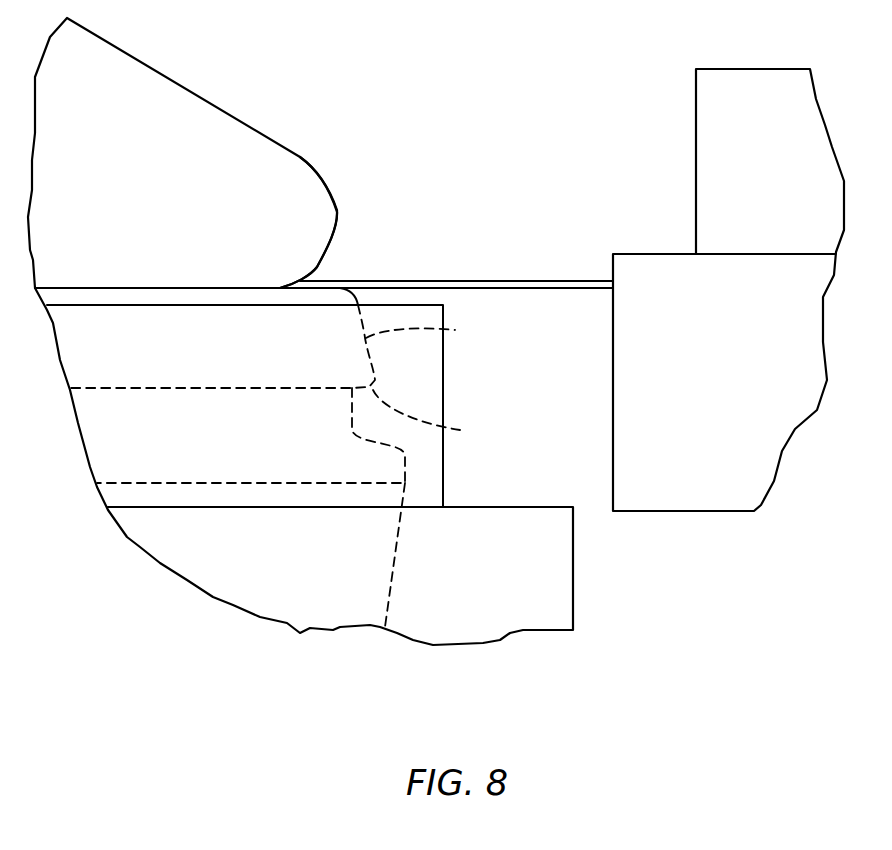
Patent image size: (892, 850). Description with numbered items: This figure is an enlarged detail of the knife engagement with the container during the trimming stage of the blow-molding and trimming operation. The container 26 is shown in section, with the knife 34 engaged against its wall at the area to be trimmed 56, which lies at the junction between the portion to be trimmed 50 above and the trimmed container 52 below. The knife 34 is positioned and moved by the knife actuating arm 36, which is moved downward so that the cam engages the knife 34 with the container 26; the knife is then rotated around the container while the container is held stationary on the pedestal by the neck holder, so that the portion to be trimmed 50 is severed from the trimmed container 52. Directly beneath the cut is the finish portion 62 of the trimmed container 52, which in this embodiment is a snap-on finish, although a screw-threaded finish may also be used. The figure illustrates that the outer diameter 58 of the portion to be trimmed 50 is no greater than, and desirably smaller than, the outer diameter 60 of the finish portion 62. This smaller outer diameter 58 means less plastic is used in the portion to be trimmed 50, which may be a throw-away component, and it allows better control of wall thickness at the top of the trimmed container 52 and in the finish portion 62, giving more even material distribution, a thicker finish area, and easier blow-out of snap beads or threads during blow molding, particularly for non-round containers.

The portion to be trimmed 50 is at (232, 137).
The outer diameter of the portion to be trimmed 58 is at (336, 213).
The area to be trimmed 56 is at (327, 260).
The knife 34 is at (490, 280).
The container 26 is at (386, 387).
The finish portion 62 is at (429, 331).
The outer diameter of the finish portion 60 is at (436, 416).
The trimmed container 52 is at (347, 572).
The knife actuating arm 36 is at (694, 367).